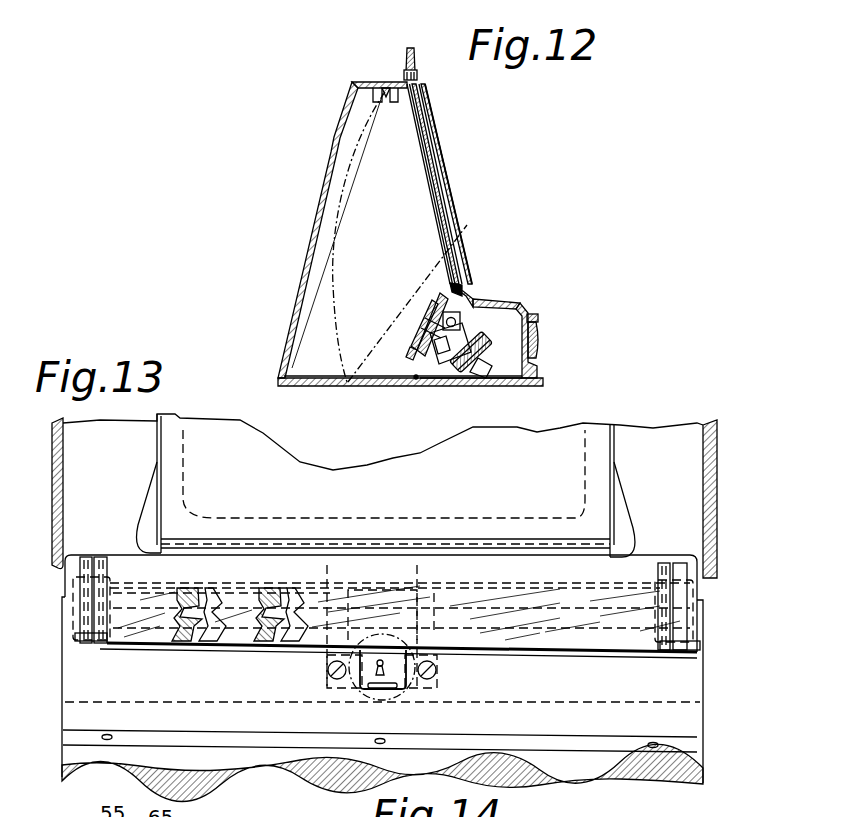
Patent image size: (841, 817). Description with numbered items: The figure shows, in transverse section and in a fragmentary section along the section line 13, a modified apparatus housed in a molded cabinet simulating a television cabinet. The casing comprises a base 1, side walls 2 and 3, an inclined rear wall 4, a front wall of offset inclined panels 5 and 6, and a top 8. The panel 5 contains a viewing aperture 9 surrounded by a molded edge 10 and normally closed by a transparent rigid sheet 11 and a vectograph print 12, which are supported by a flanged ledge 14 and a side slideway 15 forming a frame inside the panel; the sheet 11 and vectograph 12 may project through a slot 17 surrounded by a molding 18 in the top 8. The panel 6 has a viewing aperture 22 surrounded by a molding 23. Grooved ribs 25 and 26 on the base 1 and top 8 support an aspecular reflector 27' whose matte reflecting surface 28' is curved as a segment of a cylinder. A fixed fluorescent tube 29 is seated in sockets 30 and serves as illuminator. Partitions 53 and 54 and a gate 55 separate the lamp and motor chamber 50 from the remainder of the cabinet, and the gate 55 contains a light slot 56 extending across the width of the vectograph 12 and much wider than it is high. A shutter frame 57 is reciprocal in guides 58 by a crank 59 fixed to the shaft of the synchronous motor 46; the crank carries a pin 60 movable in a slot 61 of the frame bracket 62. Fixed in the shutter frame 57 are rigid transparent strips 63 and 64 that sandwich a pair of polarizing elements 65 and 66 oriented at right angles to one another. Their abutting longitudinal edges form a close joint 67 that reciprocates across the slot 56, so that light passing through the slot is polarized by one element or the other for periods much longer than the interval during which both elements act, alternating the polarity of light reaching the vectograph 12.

In FIG. 12, the base 1 is at (310, 387).
In FIG. 13, the side wall 2 is at (717, 533).
In FIG. 12, the side wall 3 is at (326, 359).
In FIG. 13, the side wall 3 is at (53, 497).
In FIG. 12, the inclined rear wall 4 is at (293, 322).
In FIG. 13, the inclined panel 5 is at (675, 483).
In FIG. 12, the inclined panel 6 is at (538, 368).
In FIG. 12, the top 8 is at (356, 82).
In FIG. 12, the viewing aperture 9 is at (442, 118).
In FIG. 12, the molded edge 10 is at (440, 133).
In FIG. 12, the transparent rigid sheet 11 is at (437, 163).
In FIG. 12, the vectograph print 12 is at (430, 180).
In FIG. 13, the vectograph print 12 is at (432, 482).
In FIG. 12, the section line 13— 13 is at (467, 224).
In FIG. 12, the flanged ledge 14 is at (394, 283).
In FIG. 13, the flanged ledge 14 is at (392, 438).
In FIG. 12, the side slideway 15 is at (412, 27).
In FIG. 13, the side slideway 15 is at (392, 454).
In FIG. 12, the slot 17 is at (414, 90).
In FIG. 12, the molding 18 is at (418, 76).
In FIG. 12, the viewing aperture 22 is at (540, 340).
In FIG. 12, the molding 23 is at (538, 318).
In FIG. 12, the grooved rib 25 is at (340, 388).
In FIG. 12, the grooved rib 26 is at (383, 87).
In FIG. 12, the aspecular reflector 27' is at (303, 286).
In FIG. 12, the matte reflecting surface 28' is at (338, 237).
In FIG. 12, the fluorescent tube 29 is at (461, 321).
In FIG. 13, the fluorescent tube 29 is at (633, 588).
In FIG. 12, the socket 30 is at (462, 332).
In FIG. 12, the synchronous motor 46 is at (481, 352).
In FIG. 13, the synchronous motor 46 is at (420, 628).
In FIG. 12, the lamp and motor chamber 50 is at (481, 370).
In FIG. 12, the partition 53 is at (424, 383).
In FIG. 13, the partition 53 is at (567, 739).
In FIG. 12, the partition 54 is at (478, 300).
In FIG. 12, the gate 55 is at (455, 288).
In FIG. 13, the gate 55 is at (72, 575).
In FIG. 12, the light slot 56 is at (437, 307).
In FIG. 13, the light slot 56 is at (233, 597).
In FIG. 12, the shutter frame 57 is at (430, 332).
In FIG. 13, the shutter frame 57 is at (115, 647).
In FIG. 13, the guide 58 is at (78, 641).
In FIG. 12, the crank 59 is at (416, 380).
In FIG. 13, the crank 59 is at (420, 687).
In FIG. 13, the pin 60 is at (384, 690).
In FIG. 13, the slot 61 is at (363, 688).
In FIG. 12, the frame bracket 62 is at (408, 349).
In FIG. 13, the frame bracket 62 is at (438, 666).
In FIG. 13, the transparent strip 63 is at (127, 633).
In FIG. 13, the transparent strip 64 is at (223, 633).
In FIG. 13, the polarizing element 65 is at (187, 600).
In FIG. 13, the polarizing element 66 is at (187, 633).
In FIG. 13, the close joint 67 is at (193, 613).